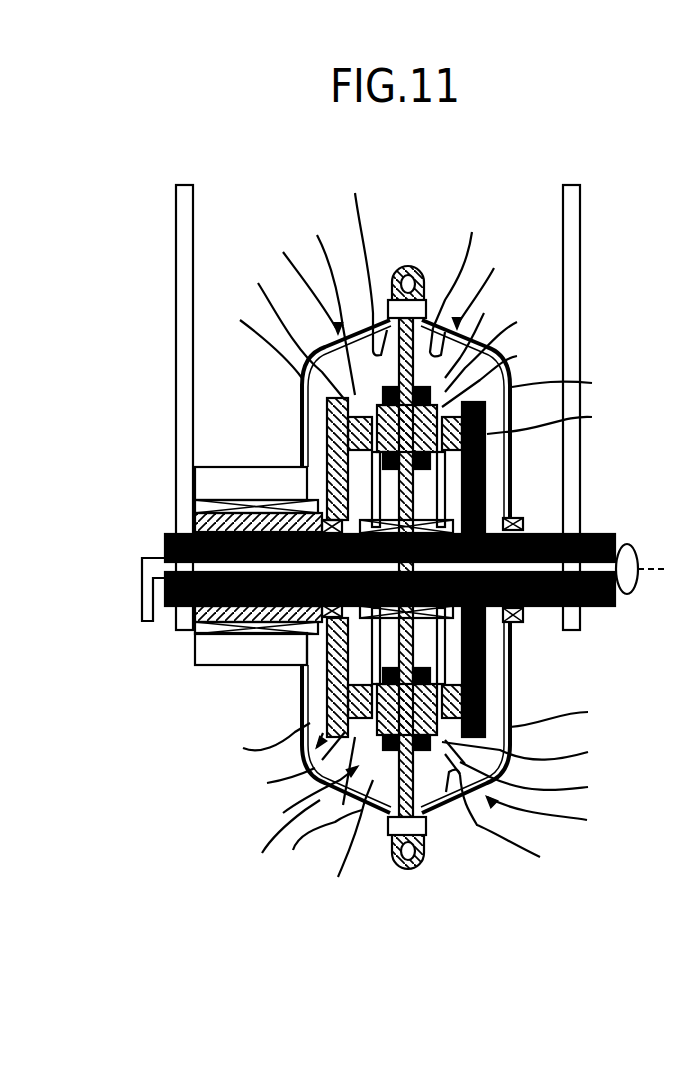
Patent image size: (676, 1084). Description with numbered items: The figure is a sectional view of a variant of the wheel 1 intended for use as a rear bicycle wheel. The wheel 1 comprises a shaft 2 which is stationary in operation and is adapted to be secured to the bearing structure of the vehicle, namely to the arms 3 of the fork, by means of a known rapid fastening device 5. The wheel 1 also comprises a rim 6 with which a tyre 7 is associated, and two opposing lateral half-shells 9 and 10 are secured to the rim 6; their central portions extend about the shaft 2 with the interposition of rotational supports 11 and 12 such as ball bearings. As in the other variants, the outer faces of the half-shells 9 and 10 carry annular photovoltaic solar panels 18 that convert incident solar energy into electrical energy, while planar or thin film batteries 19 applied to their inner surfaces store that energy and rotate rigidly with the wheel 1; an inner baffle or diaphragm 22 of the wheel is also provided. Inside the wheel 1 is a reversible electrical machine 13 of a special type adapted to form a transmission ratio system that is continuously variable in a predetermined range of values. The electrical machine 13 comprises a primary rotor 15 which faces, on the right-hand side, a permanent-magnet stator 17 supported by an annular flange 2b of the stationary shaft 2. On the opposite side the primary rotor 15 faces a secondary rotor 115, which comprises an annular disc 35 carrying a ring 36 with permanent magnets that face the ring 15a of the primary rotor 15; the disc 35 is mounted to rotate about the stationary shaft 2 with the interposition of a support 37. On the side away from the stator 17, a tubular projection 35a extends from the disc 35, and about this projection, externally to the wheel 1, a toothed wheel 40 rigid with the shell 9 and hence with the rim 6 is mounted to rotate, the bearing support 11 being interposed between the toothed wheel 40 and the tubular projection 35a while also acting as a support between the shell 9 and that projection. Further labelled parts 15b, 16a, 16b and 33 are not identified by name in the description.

The wheel 1 is at (342, 243).
The shaft 2 is at (185, 530).
The annular flange 2b is at (490, 458).
The fork arms 3 is at (176, 230).
The rapid fastening device 5 is at (128, 596).
The rim 6 is at (427, 305).
The tyre 7 is at (408, 266).
The half-shell 9 is at (295, 587).
The half-shell 10 is at (564, 550).
The bearing support 11 is at (240, 498).
The rotational support 12 is at (530, 622).
The electrical machine 13 is at (277, 803).
The primary rotor 15 is at (425, 780).
The ring of the primary rotor 15a is at (284, 527).
The housing half 15b is at (533, 553).
The inner cover 16a is at (301, 522).
The inner cover 16b is at (534, 556).
The permanent-magnet stator 17 is at (552, 419).
The photovoltaic solar panel 18 is at (435, 533).
The planar or film battery 19 is at (391, 523).
The inner baffle or diaphragm 22 is at (413, 593).
The stator core 33 is at (313, 697).
The annular disc 35 is at (327, 428).
The tubular projection 35a is at (205, 514).
The permanent-magnet ring 36 is at (327, 400).
The support 37 is at (320, 478).
The toothed wheel 40 is at (230, 480).
The secondary rotor 115 is at (300, 670).